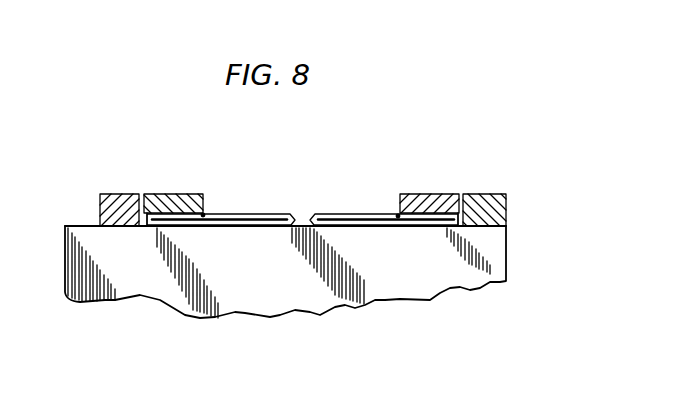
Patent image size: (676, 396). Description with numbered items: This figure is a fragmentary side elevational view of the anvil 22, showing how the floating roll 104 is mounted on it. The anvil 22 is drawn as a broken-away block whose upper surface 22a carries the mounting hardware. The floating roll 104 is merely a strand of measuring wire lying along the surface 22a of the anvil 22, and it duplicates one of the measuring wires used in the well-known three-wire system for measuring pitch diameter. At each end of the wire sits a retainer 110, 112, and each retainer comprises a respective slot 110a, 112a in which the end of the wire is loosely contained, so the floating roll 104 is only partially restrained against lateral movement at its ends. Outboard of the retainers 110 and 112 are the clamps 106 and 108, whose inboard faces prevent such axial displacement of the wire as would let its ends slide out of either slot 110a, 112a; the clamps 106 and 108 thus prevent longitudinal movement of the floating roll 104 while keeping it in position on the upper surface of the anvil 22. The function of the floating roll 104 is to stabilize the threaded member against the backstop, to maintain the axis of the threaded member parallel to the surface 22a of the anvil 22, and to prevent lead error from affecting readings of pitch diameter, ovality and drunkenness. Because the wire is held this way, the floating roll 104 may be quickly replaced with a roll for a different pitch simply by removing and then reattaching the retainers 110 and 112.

The anvil 22 is at (485, 243).
The surface of the anvil 22a is at (83, 226).
The floating roll 104 is at (355, 217).
The clamp 106 is at (117, 202).
The clamp 108 is at (493, 207).
The retainer 110 is at (188, 203).
The slot 110a is at (204, 214).
The retainer 112 is at (432, 205).
The slot 112a is at (398, 215).